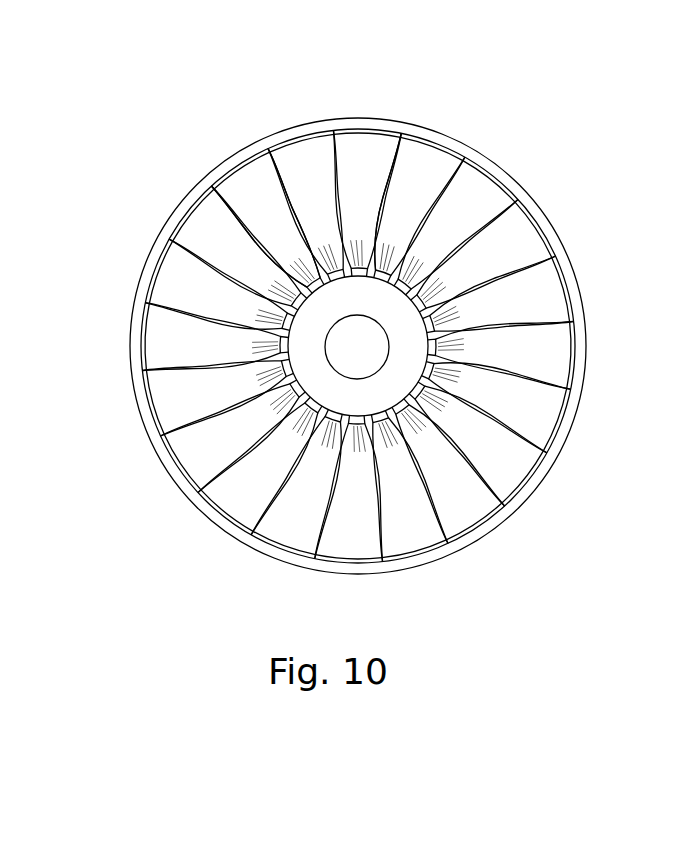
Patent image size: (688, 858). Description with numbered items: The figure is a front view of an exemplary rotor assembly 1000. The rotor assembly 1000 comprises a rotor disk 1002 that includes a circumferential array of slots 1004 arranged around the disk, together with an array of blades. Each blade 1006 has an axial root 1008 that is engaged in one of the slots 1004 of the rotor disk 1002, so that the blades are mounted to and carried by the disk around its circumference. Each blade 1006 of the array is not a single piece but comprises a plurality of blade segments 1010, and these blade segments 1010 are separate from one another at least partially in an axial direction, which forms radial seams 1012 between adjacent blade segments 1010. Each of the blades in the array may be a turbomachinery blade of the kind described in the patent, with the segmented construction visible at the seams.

The rotor assembly 1000 is at (287, 98).
The rotor disk 1002 is at (357, 359).
The slots 1004 is at (283, 342).
The blade 1006 is at (253, 185).
The axial root 1008 is at (381, 263).
The blade segments 1010 is at (293, 265).
The radial seams 1012 is at (305, 265).